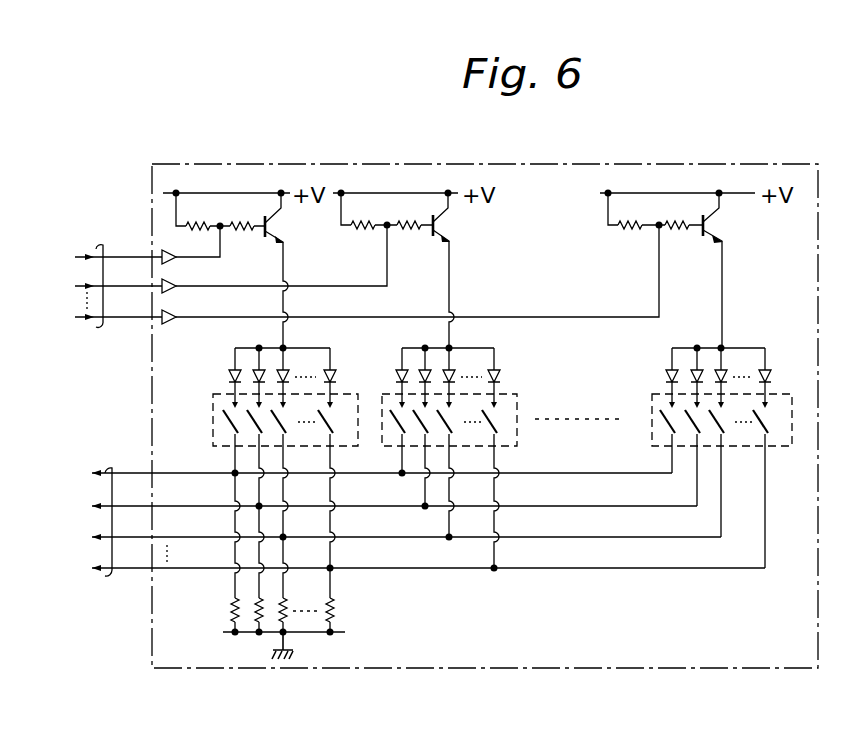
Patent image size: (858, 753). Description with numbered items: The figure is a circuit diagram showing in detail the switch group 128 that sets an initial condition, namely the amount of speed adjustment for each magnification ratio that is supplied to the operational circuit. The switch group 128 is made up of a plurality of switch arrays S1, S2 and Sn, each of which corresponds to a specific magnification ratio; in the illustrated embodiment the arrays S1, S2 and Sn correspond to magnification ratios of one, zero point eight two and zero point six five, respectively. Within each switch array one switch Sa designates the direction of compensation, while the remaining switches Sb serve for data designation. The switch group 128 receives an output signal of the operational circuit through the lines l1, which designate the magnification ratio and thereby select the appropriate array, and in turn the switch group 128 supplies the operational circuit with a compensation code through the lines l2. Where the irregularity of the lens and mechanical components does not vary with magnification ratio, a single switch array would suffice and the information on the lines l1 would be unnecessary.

The switch group 128 is at (404, 163).
The switch array S1 is at (214, 421).
The switch array S2 is at (381, 397).
The switch array Sn is at (651, 403).
The lines l1 is at (118, 261).
The lines l2 is at (428, 550).